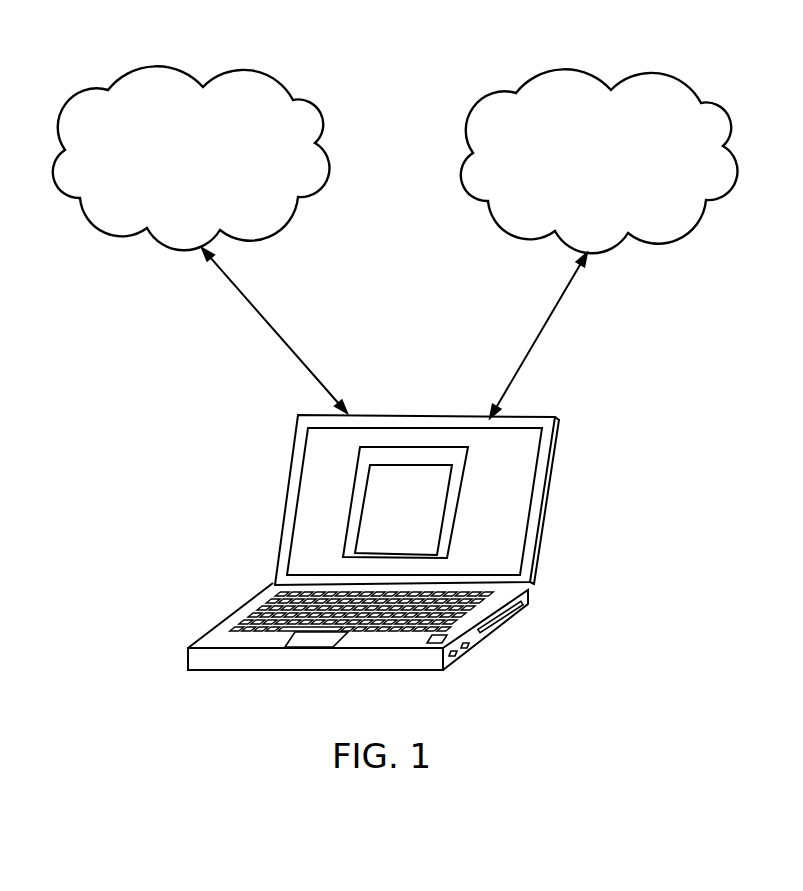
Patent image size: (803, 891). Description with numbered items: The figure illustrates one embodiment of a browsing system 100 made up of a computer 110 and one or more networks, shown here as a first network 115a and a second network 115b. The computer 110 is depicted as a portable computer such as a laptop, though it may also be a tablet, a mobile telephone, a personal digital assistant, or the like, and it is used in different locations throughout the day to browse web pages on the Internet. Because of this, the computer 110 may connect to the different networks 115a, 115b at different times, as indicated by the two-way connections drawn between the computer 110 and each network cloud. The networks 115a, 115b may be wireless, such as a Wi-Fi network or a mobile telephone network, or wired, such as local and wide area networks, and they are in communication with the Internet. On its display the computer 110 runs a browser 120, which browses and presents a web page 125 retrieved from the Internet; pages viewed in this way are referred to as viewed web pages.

The browsing system 100 is at (100, 48).
The computer 110 is at (546, 489).
The network 115a is at (191, 158).
The network 115b is at (599, 161).
The browser 120 is at (352, 498).
The web page 125 is at (368, 533).